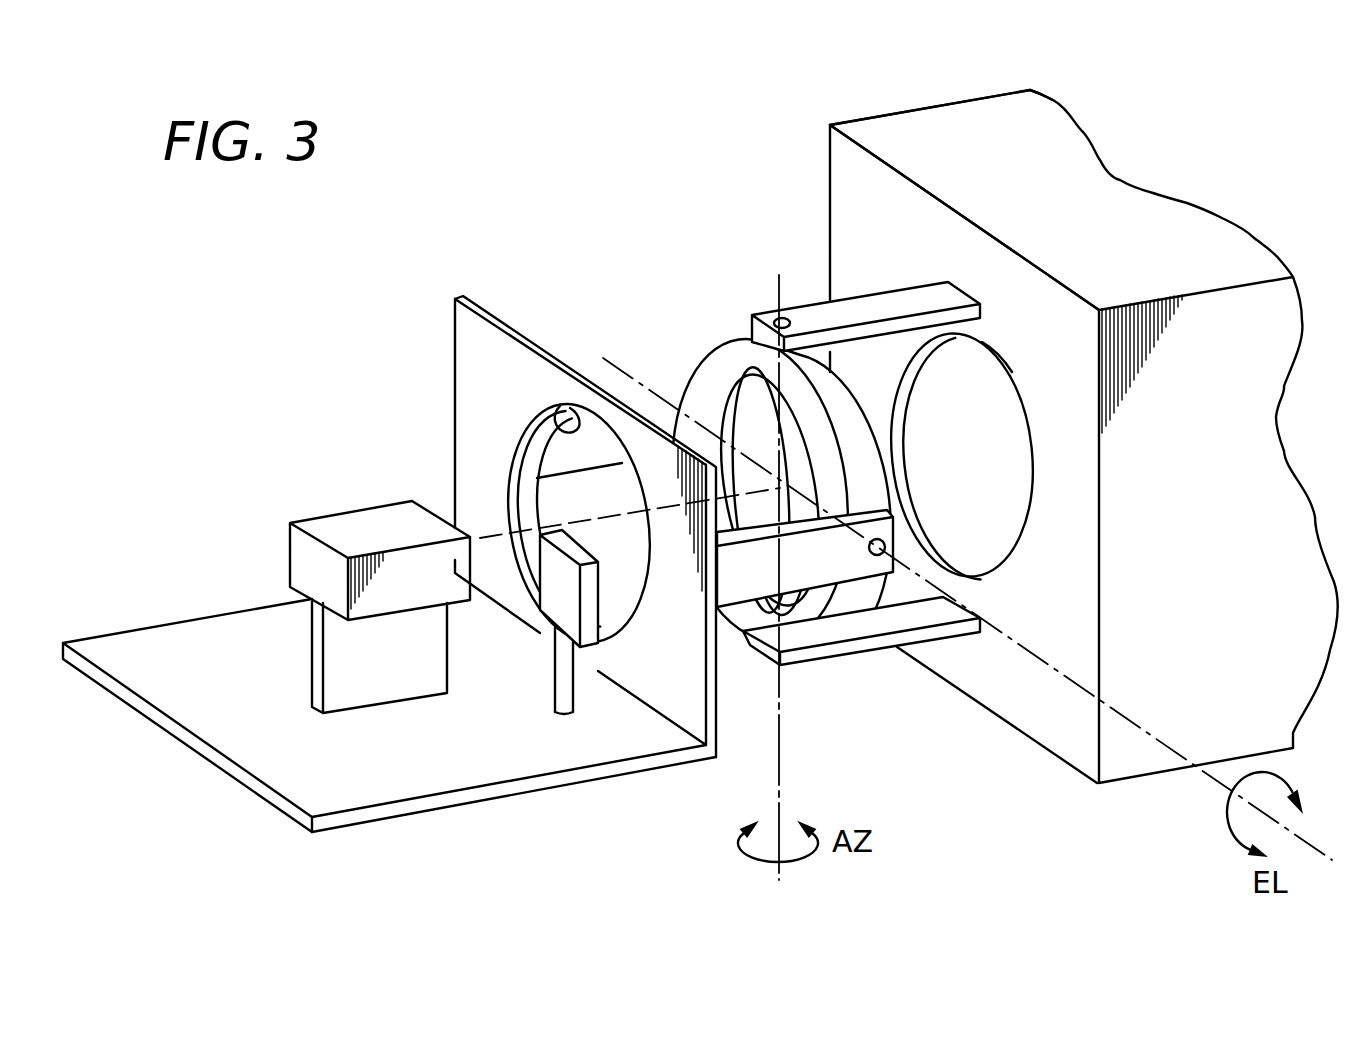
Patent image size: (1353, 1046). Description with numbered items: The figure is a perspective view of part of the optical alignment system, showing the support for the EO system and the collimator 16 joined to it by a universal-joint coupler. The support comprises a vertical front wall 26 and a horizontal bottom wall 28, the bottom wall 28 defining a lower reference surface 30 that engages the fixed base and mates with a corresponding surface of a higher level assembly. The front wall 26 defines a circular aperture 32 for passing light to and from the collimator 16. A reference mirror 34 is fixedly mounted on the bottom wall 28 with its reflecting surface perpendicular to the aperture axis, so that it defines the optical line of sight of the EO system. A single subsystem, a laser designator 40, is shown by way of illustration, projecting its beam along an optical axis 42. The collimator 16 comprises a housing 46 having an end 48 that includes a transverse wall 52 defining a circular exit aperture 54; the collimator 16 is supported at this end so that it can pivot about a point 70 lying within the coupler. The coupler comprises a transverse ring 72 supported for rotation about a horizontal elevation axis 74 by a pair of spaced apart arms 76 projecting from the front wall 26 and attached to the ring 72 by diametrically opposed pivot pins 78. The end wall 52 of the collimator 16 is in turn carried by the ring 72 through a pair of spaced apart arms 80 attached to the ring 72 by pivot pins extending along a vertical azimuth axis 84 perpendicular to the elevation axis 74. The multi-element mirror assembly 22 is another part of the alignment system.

The collimator 16 is at (1085, 136).
The multi-element mirror assembly 22 is at (580, 408).
The vertical front wall 26 is at (458, 297).
The horizontal bottom wall 28 is at (407, 810).
The lower reference surface 30 is at (522, 788).
The circular aperture 32 is at (520, 473).
The reference mirror 34 is at (553, 613).
The laser designator 40 is at (340, 513).
The optical axis 42 is at (488, 535).
The housing 46 is at (976, 94).
The end 48 is at (880, 113).
The transverse wall 52 is at (850, 178).
The circular exit aperture 54 is at (985, 358).
The point 70 is at (785, 465).
The transverse ring 72 is at (735, 337).
The elevation axis 74 is at (1070, 683).
The arms 76 is at (552, 458).
The pivot pins 78 is at (872, 555).
The arms 80 is at (808, 314).
The azimuth axis 84 is at (780, 755).